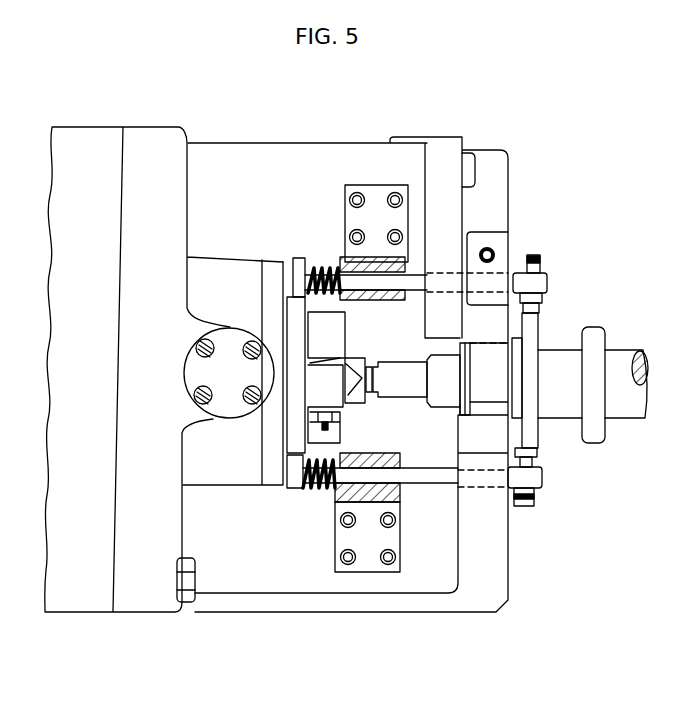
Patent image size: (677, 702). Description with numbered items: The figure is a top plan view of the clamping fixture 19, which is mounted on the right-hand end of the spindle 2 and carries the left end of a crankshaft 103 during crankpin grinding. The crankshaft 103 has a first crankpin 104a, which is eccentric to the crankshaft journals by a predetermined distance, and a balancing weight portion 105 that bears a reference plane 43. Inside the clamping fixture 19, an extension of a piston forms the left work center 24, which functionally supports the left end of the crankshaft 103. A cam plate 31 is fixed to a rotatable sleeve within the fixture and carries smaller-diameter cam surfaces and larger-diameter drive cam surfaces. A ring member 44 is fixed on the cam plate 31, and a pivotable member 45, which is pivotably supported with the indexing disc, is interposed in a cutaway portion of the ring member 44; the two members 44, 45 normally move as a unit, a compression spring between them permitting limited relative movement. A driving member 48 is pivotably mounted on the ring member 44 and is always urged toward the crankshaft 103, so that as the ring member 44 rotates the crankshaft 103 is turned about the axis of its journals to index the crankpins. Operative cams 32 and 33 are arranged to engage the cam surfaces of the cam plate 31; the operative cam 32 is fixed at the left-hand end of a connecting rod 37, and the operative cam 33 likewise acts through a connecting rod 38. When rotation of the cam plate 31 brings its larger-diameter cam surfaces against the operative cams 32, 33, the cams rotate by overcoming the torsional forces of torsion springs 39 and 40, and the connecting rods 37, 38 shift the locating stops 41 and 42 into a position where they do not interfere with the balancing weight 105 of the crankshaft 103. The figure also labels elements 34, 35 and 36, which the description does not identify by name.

The spindle 2 is at (103, 143).
The clamping fixture 19 is at (157, 587).
The left work center 24 is at (352, 380).
The cam plate 31 is at (295, 338).
The operative cam 32 is at (298, 260).
The operative cam 33 is at (293, 482).
The upper bearing block 34 is at (375, 203).
The bracket 35 is at (503, 243).
The lower bearing block 36 is at (342, 537).
The connecting rod 37 is at (393, 282).
The connecting rod 38 is at (432, 478).
The torsion spring 39 is at (328, 263).
The torsion spring 40 is at (310, 482).
The locating stop 41 is at (543, 303).
The locating stop 42 is at (538, 453).
The reference plane 43 is at (539, 340).
The ring member 44 is at (345, 313).
The pivotable member 45 is at (335, 400).
The driving member 48 is at (370, 367).
The crankshaft 103 is at (607, 337).
The first crankpin 104a is at (563, 407).
The balancing weight portion 105 is at (565, 332).